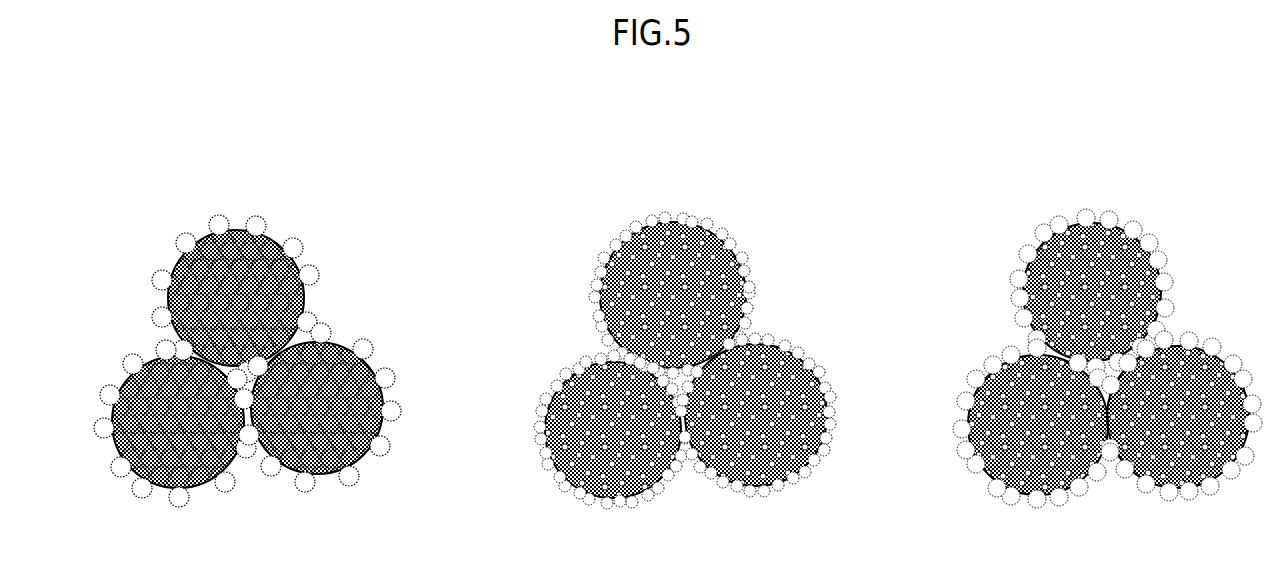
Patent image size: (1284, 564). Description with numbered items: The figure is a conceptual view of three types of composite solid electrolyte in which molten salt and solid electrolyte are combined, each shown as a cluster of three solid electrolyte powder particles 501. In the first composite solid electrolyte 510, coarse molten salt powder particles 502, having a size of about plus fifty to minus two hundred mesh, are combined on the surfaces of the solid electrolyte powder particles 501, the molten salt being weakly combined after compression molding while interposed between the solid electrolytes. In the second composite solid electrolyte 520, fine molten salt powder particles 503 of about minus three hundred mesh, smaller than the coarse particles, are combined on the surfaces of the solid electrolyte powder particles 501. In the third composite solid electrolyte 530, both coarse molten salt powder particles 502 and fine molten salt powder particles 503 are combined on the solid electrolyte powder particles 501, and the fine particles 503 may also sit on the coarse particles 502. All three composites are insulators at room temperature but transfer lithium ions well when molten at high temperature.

The solid electrolyte powder particles 501 is at (116, 357).
The coarse molten salt powder particles 502 is at (170, 256).
The fine molten salt powder particles 503 is at (595, 280).
The first composite solid electrolyte 510 is at (240, 297).
The second composite solid electrolyte 520 is at (640, 300).
The third composite solid electrolyte 530 is at (1033, 253).